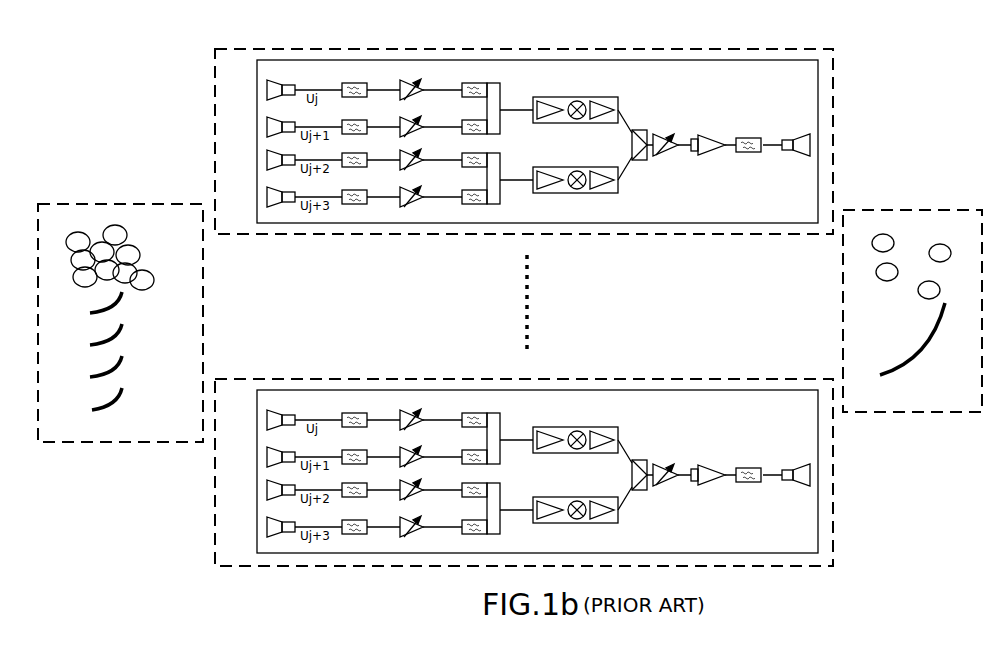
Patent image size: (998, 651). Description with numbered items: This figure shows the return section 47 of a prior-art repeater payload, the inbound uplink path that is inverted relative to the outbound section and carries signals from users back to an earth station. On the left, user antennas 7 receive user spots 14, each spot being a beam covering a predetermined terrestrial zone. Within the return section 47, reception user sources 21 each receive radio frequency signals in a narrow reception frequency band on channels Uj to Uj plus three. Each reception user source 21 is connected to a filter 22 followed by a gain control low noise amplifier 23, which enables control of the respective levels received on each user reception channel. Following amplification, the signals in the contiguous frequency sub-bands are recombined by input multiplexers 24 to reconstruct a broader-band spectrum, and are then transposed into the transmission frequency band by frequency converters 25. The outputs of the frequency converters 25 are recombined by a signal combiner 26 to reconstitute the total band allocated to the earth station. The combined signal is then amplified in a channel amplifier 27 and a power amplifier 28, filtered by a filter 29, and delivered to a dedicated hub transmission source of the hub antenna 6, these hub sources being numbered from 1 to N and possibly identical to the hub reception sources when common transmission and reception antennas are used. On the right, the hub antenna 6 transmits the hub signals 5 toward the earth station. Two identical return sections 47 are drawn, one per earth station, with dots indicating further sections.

The return section 47 is at (715, 49).
The reception user source 21 is at (268, 160).
The filter 22 is at (341, 193).
The gain control low noise amplifier 23 is at (415, 193).
The input multiplexer 24 is at (498, 153).
The frequency converter 25 is at (598, 167).
The signal combiner 26 is at (642, 130).
The channel amplifier 27 is at (673, 135).
The power amplifier 28 is at (713, 153).
The filter 29 is at (752, 154).
The hub reception source 1 is at (803, 135).
The hub reception source N is at (803, 465).
The user spot 14 is at (142, 280).
The user antenna 7 is at (122, 390).
The hub signals 5 is at (945, 253).
The hub antenna 6 is at (920, 350).